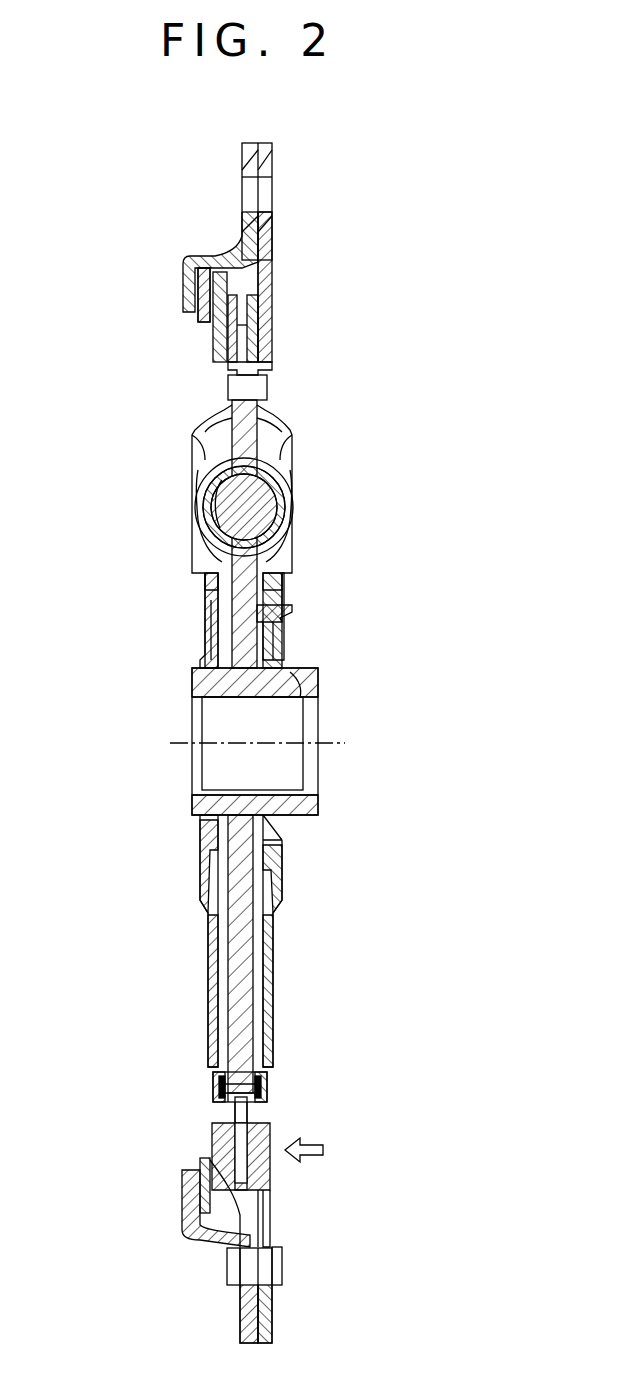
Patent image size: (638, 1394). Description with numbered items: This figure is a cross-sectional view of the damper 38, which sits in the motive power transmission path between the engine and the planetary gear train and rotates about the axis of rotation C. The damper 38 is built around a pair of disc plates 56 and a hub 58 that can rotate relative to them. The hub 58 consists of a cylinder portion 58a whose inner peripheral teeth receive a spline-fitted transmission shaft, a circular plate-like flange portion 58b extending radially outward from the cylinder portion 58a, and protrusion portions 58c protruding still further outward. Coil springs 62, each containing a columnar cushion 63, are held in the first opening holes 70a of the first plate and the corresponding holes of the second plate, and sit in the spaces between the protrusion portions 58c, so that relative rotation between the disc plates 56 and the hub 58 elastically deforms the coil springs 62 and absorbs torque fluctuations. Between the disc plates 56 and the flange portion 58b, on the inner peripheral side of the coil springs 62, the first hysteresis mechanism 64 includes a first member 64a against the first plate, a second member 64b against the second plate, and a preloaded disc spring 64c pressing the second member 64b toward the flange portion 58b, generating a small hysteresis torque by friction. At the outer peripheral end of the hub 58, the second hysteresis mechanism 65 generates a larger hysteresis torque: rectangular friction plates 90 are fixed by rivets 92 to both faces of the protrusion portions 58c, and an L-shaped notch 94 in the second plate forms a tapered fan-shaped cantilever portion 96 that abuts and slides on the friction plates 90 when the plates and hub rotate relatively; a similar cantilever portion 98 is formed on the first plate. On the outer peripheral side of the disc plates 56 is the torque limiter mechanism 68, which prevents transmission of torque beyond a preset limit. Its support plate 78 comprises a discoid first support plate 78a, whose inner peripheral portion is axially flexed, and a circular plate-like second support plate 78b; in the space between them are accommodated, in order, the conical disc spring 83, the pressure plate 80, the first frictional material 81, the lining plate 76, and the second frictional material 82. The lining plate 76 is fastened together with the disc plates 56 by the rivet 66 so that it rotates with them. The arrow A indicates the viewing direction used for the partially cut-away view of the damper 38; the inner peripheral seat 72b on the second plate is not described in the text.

The damper 38 is at (128, 160).
The support plate 78 is at (257, 132).
The first support plate 78a is at (226, 258).
The second support plate 78b is at (263, 248).
The torque limiter mechanism 68 is at (150, 311).
The conical disc spring 83 is at (204, 290).
The second frictional material 82 is at (258, 312).
The first frictional material 81 is at (222, 325).
The pressure plate 80 is at (220, 346).
The lining plate 76 is at (250, 365).
The rivet 66 is at (255, 392).
The first opening holes 70a is at (206, 444).
The second seat 72b is at (286, 448).
The cushion 63 is at (228, 508).
The coil spring 62 is at (290, 508).
The first hysteresis mechanism 64 is at (305, 614).
The first member 64a is at (210, 645).
The second member 64b is at (286, 596).
The disc spring 64c is at (268, 640).
The hub 58 is at (318, 668).
The cylinder portion 58a is at (277, 688).
The flange portion 58b is at (242, 618).
The protrusion portions 58c is at (243, 1053).
The axis of rotation C is at (330, 745).
The disc plates 56 is at (195, 922).
The second hysteresis mechanism 65 is at (200, 1077).
The notch 94 is at (213, 1080).
The cantilever portion 96 is at (267, 1090).
The friction plates 90 is at (258, 1100).
The cantilever portion 98 is at (212, 1095).
The rivets 92 is at (240, 1130).
The arrow A is at (317, 1153).